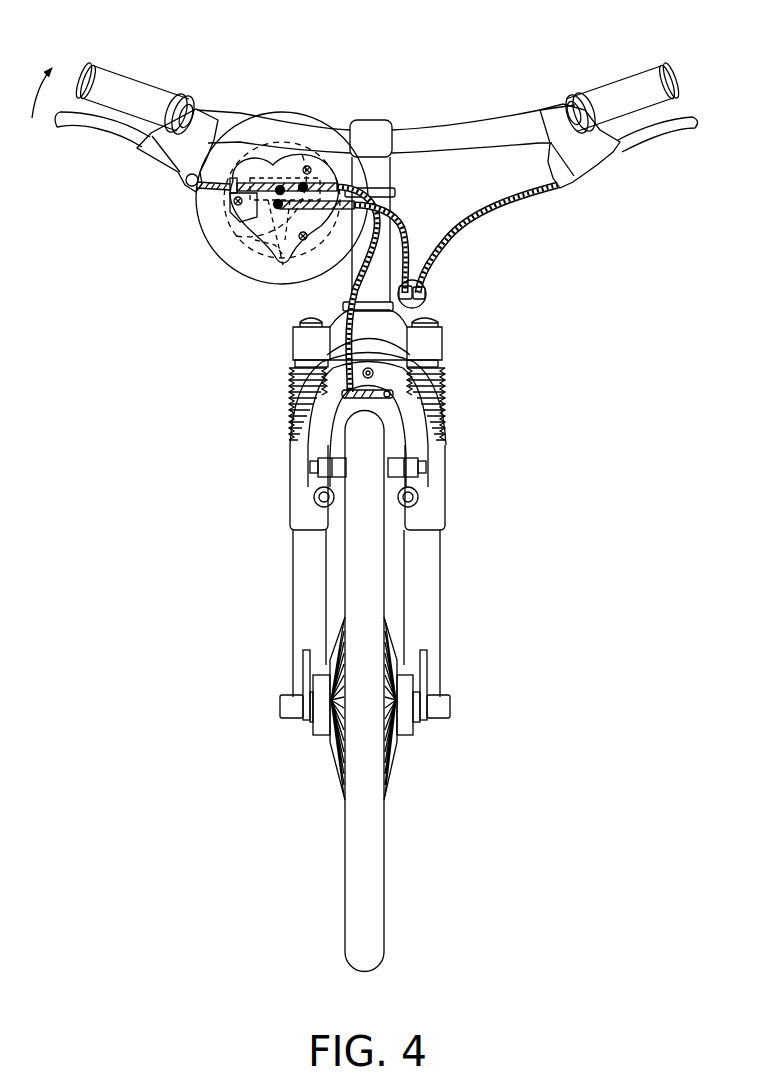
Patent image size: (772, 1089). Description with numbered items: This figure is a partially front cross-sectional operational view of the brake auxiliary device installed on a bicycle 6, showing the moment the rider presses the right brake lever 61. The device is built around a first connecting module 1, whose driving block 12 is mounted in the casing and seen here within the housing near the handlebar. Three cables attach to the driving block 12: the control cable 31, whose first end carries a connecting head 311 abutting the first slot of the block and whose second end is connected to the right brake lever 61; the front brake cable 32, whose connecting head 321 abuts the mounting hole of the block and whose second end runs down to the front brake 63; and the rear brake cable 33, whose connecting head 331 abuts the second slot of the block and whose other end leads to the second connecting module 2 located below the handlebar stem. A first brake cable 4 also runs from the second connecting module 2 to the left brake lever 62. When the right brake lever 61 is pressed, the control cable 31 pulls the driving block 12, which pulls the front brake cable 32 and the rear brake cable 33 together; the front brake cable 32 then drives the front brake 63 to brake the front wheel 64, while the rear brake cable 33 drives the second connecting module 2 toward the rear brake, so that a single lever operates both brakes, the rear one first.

The first connecting module 1 is at (221, 211).
The driving block 12 is at (246, 283).
The second connecting module 2 is at (431, 298).
The control cable 31 is at (266, 160).
The connecting head 311 is at (318, 165).
The front brake cable 32 is at (352, 279).
The connecting head 321 is at (214, 266).
The rear brake cable 33 is at (410, 240).
The connecting head 331 is at (196, 236).
The first brake cable 4 is at (528, 208).
The bicycle 6 is at (436, 80).
The right brake lever 61 is at (113, 127).
The left brake lever 62 is at (648, 134).
The front brake 63 is at (325, 442).
The front wheel 64 is at (353, 590).